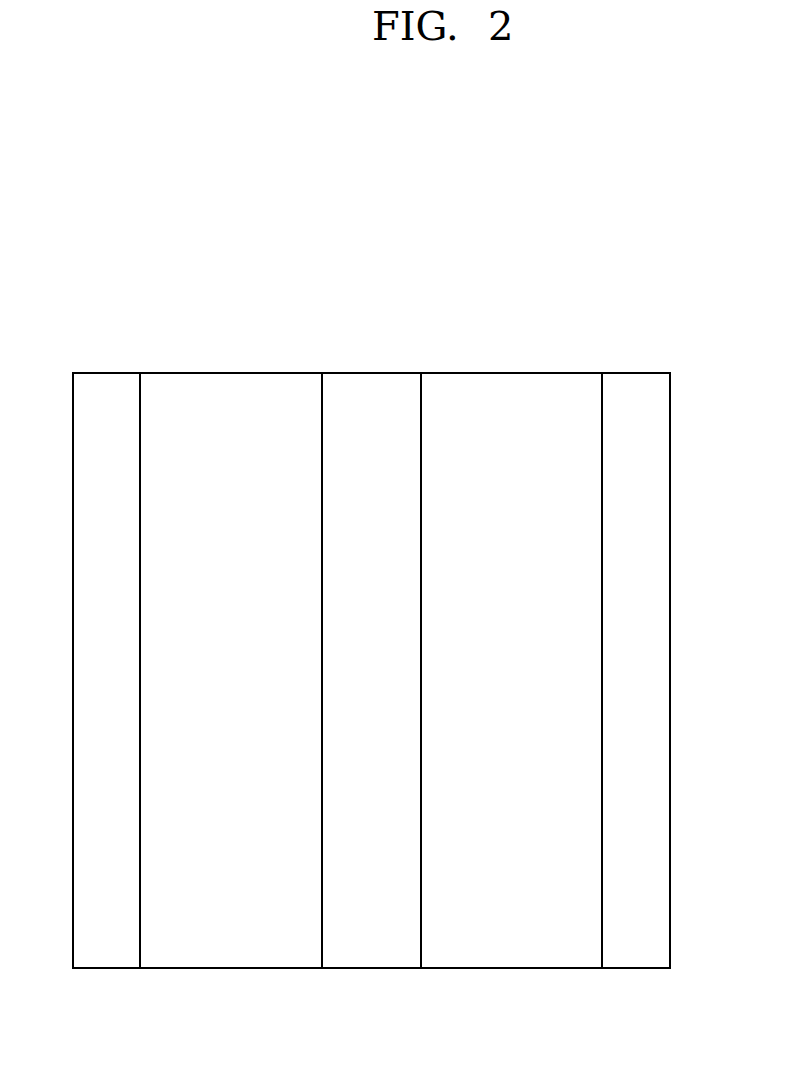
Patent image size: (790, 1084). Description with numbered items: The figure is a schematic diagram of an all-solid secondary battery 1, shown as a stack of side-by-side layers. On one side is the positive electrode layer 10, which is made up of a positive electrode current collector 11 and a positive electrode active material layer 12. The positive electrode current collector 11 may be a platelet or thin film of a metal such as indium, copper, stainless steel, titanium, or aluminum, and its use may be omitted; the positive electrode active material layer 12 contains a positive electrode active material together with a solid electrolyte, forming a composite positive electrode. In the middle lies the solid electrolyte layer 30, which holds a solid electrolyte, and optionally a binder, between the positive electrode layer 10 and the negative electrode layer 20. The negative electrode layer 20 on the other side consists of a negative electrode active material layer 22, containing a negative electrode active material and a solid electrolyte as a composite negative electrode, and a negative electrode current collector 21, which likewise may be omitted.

The all-solid secondary battery 1 is at (460, 270).
The positive electrode layer 10 is at (233, 322).
The positive electrode current collector 11 is at (102, 387).
The positive electrode active material layer 12 is at (228, 387).
The solid electrolyte layer 30 is at (368, 387).
The negative electrode layer 20 is at (508, 322).
The negative electrode active material layer 22 is at (515, 387).
The negative electrode current collector 21 is at (641, 387).